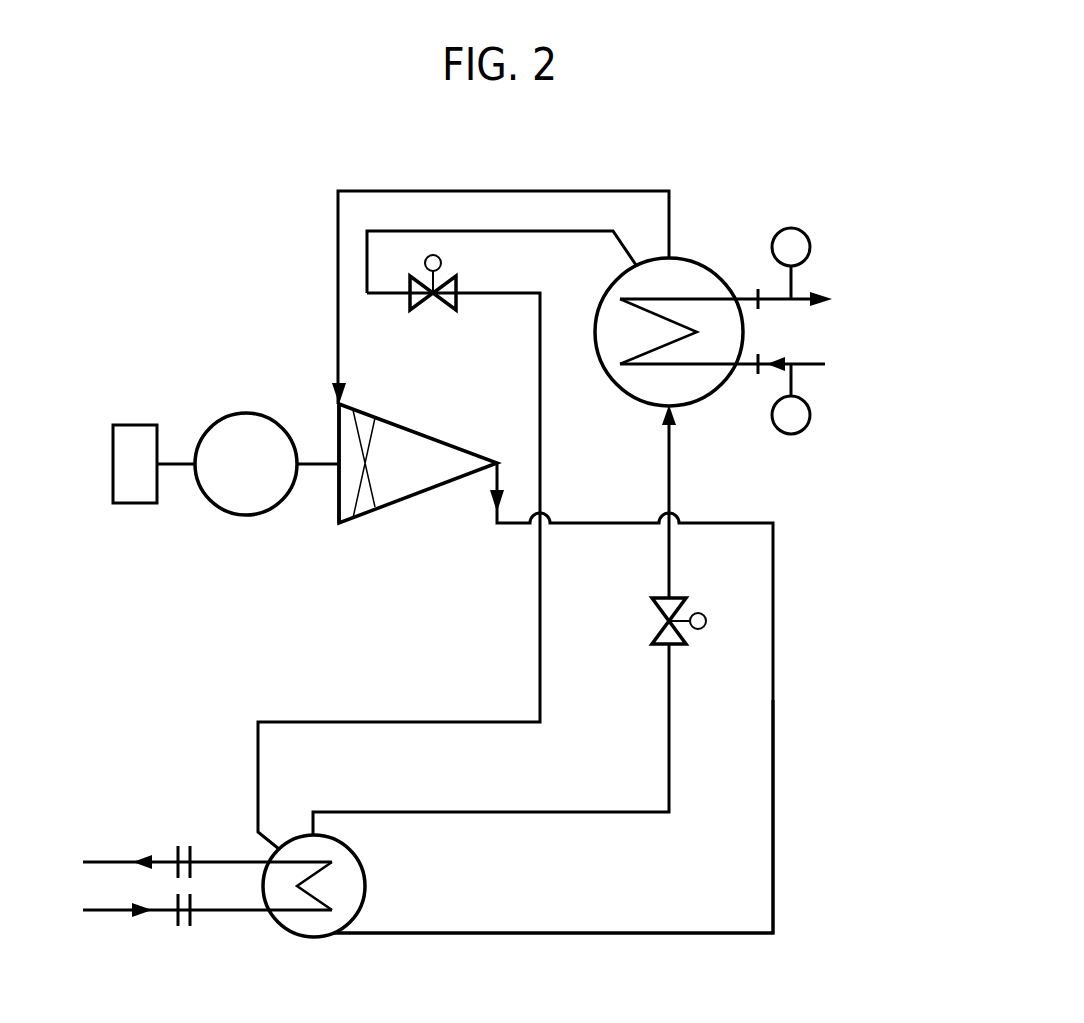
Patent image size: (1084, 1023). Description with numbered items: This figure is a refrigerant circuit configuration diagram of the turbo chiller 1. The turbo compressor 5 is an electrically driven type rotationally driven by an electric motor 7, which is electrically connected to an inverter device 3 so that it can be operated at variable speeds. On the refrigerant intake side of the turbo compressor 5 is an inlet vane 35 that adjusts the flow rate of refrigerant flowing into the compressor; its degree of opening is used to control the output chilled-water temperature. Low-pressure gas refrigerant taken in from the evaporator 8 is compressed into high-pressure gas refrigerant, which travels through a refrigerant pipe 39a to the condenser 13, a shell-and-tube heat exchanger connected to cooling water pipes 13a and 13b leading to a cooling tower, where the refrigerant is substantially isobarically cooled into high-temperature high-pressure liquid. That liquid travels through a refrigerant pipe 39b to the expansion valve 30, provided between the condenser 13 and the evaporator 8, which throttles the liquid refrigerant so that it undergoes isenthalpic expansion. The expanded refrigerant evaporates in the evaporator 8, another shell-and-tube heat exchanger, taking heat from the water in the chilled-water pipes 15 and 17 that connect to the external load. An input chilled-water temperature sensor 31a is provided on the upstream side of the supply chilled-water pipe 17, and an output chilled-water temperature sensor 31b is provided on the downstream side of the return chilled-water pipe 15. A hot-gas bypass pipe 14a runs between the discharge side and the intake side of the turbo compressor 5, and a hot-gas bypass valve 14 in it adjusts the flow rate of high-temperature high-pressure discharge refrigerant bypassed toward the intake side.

The turbo chiller 1 is at (186, 222).
The inverter device 3 is at (132, 425).
The electric motor 7 is at (233, 413).
The turbo compressor 5 is at (433, 437).
The inlet vane 35 is at (360, 413).
The hot-gas bypass valve 14 is at (441, 263).
The hot-gas bypass pipe 14a is at (512, 295).
The evaporator 8 is at (607, 290).
The supply chilled-water pipe 17 is at (773, 298).
The return chilled-water pipe 15 is at (818, 362).
The output chilled-water temperature sensor 31b is at (811, 247).
The input chilled-water temperature sensor 31a is at (811, 415).
The expansion valve 30 is at (710, 612).
The refrigerant pipe 39b is at (560, 812).
The refrigerant pipe 39a is at (532, 933).
The condenser 13 is at (287, 932).
The cooling water pipe 13a is at (103, 910).
The cooling water pipe 13b is at (103, 862).